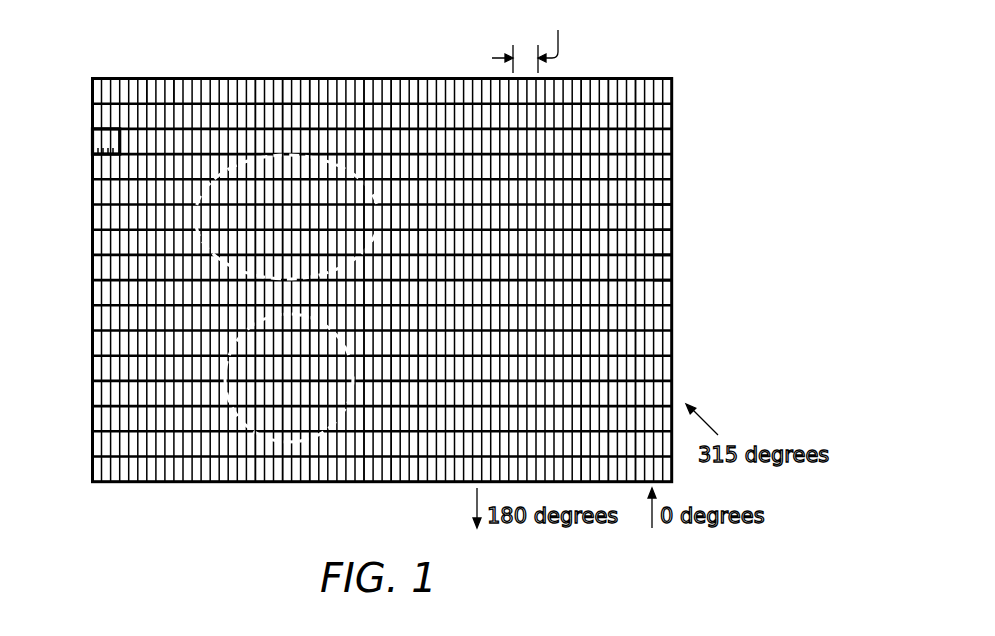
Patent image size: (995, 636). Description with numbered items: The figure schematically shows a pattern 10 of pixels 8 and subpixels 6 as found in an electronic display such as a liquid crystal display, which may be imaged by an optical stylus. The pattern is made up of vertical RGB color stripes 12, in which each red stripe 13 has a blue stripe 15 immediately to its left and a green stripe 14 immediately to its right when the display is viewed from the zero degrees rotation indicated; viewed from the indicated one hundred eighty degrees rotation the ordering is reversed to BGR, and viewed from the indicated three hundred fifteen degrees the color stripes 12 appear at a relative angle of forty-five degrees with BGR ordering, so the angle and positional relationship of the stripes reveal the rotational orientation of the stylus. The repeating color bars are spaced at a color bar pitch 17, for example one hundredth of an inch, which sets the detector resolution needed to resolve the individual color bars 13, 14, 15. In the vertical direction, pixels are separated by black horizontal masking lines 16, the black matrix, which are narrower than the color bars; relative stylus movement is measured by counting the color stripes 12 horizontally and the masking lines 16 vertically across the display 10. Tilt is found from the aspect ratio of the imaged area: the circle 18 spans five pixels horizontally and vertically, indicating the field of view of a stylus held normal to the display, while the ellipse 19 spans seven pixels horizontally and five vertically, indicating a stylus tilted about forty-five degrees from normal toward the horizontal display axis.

The pattern 10 is at (265, 28).
The vertical RGB color stripes 12 is at (145, 72).
The red stripe 13 is at (254, 78).
The green stripe 14 is at (367, 78).
The blue stripe 15 is at (585, 78).
The black horizontal masking lines 16 is at (657, 277).
The color bar pitch 17 is at (531, 40).
The pixel 8 is at (92, 138).
The subpixel 6 is at (114, 155).
The circle 18 is at (223, 371).
The ellipse 19 is at (200, 218).